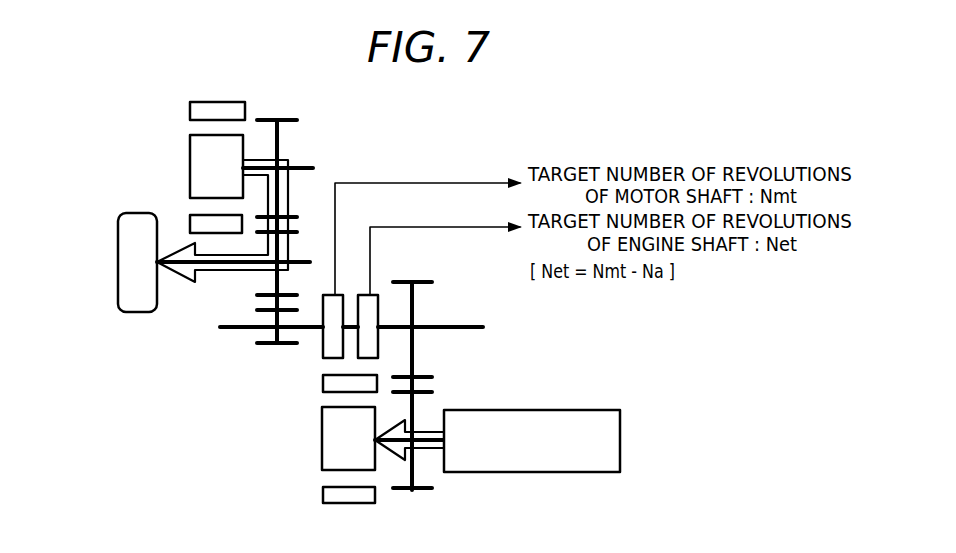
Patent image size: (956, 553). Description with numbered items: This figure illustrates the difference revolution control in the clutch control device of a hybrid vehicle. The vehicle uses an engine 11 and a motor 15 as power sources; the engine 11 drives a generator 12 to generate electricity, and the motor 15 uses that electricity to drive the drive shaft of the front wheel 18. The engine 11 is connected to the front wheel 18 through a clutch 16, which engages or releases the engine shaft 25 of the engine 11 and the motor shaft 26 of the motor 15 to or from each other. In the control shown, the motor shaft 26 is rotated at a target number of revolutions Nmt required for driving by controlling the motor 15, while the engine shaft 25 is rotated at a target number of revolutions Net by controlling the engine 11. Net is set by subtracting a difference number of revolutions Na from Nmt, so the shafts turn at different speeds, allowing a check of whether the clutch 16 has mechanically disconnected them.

The engine 11 is at (620, 440).
The generator 12 is at (322, 440).
The motor 15 is at (190, 167).
The clutch 16 is at (308, 353).
The front wheel 18 is at (118, 263).
The engine shaft 25 is at (457, 330).
The motor shaft 26 is at (240, 328).